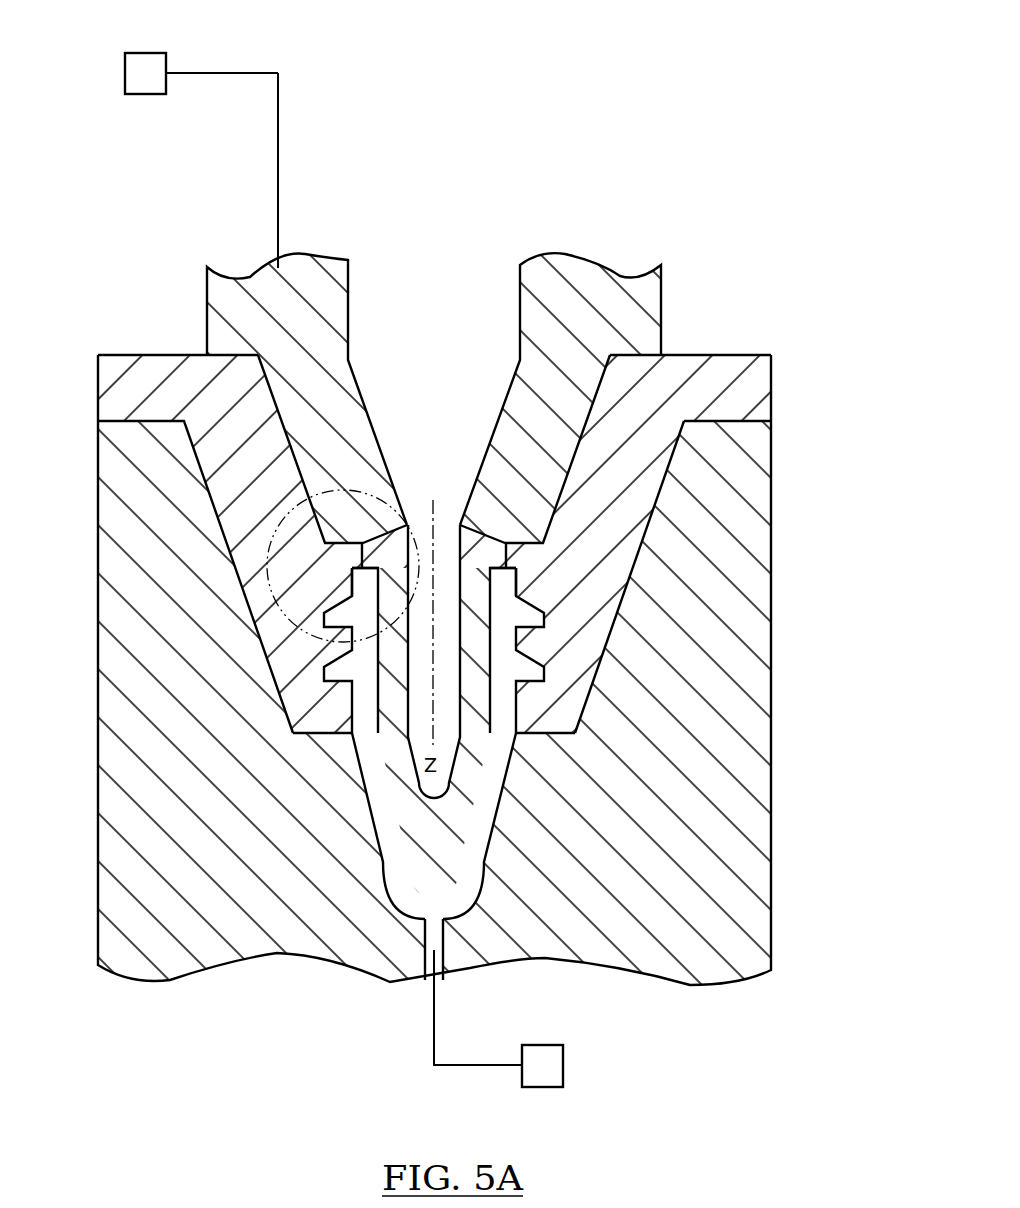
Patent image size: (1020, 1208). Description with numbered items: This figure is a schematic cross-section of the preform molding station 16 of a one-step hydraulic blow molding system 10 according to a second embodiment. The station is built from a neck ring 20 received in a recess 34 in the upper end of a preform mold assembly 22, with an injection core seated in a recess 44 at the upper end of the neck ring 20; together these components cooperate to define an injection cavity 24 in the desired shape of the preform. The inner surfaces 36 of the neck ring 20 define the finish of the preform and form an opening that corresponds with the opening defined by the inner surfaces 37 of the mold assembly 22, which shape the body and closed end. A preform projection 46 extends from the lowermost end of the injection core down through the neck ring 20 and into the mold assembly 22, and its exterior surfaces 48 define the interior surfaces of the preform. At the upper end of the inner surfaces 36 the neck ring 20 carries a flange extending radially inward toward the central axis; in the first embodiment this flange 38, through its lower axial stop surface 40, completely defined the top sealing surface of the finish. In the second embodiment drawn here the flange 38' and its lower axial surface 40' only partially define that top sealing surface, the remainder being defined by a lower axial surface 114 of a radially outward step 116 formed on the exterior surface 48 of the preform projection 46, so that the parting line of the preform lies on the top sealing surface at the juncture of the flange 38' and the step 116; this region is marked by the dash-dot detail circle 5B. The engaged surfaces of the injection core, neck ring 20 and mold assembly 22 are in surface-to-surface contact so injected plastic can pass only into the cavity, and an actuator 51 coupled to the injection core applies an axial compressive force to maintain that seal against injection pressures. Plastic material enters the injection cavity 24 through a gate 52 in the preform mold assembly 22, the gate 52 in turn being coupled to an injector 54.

The one-step hydraulic blow molding system 10 is at (690, 62).
The preform molding station 16 is at (650, 158).
The neck ring 20 is at (130, 380).
The preform mold assembly 22 is at (118, 465).
The injection cavity 24 is at (407, 897).
The recess 34 is at (293, 718).
The inner surfaces 36 is at (340, 660).
The inner surfaces 37 is at (393, 870).
The flange 38 is at (474, 518).
The flange 38' is at (388, 489).
The lower axial stop surface 40 is at (662, 563).
The lower axial surface 40' is at (203, 563).
The recess 44 is at (270, 385).
The preform projection 46 is at (485, 652).
The exterior surfaces 48 is at (498, 718).
The actuator 51 is at (130, 72).
The gate 52 is at (430, 940).
The injector 54 is at (563, 1067).
The lower axial surface 114 is at (352, 593).
The radially outward step 116 is at (462, 518).
The detail view circle 5B is at (265, 560).